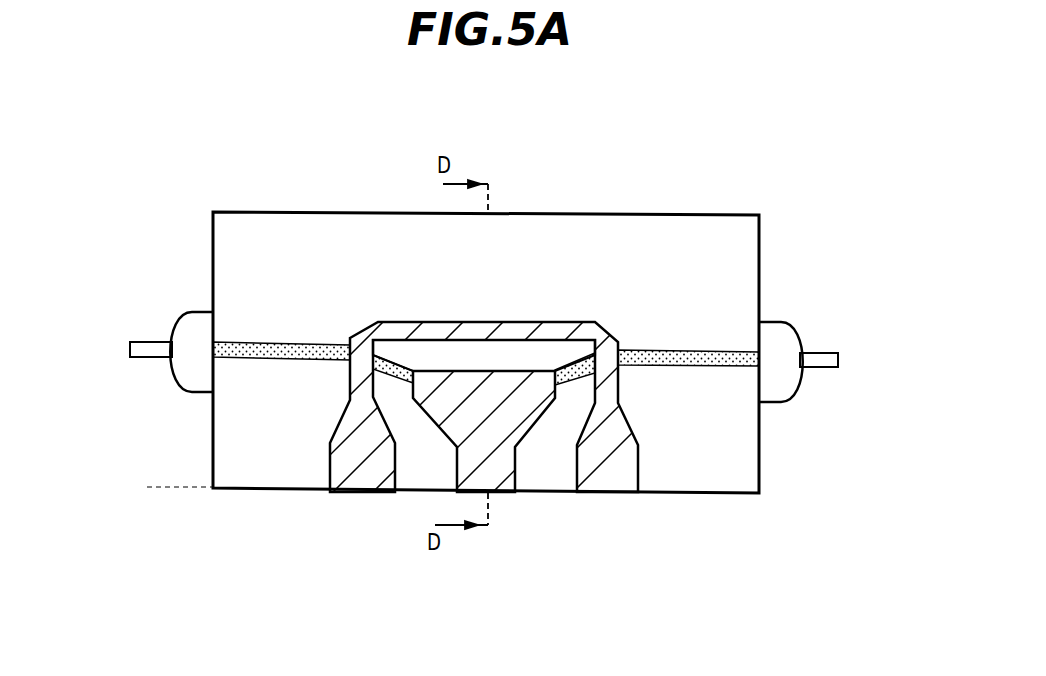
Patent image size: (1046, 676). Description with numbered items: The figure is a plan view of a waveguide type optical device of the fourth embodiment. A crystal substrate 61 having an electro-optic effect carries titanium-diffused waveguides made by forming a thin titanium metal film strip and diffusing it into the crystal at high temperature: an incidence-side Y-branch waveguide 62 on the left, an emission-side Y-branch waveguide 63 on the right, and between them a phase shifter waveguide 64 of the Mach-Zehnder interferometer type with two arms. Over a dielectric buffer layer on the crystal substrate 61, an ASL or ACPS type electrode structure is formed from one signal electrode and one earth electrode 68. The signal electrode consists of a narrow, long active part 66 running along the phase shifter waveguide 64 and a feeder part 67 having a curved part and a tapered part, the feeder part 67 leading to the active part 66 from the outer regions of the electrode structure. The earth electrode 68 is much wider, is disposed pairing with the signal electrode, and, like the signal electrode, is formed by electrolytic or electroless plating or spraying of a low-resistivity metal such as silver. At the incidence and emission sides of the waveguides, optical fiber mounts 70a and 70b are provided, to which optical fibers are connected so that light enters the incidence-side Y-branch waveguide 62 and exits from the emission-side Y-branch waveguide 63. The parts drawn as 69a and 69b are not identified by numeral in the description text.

The crystal substrate 61 is at (225, 226).
The incidence-side Y-branch waveguide 62 is at (287, 347).
The emission-side Y-branch waveguide 63 is at (688, 352).
The phase shifter waveguide 64 is at (515, 381).
The active part 66 is at (397, 323).
The feeder part 67 is at (351, 478).
The earth electrode 68 is at (500, 457).
The optical fiber mount 69a is at (192, 381).
The optical fiber mount 69b is at (780, 388).
The optical fiber mount 70a is at (136, 342).
The optical fiber mount 70b is at (827, 353).